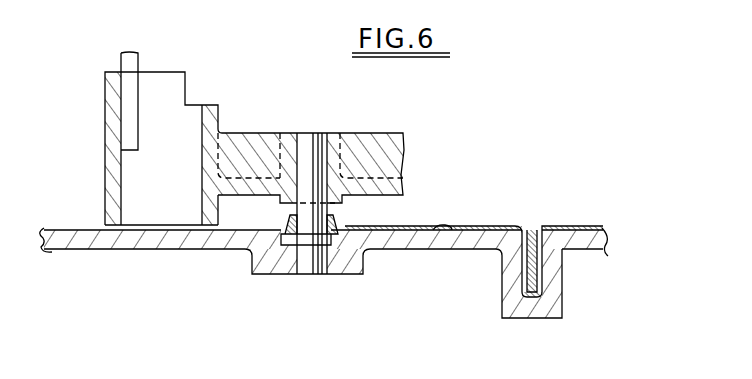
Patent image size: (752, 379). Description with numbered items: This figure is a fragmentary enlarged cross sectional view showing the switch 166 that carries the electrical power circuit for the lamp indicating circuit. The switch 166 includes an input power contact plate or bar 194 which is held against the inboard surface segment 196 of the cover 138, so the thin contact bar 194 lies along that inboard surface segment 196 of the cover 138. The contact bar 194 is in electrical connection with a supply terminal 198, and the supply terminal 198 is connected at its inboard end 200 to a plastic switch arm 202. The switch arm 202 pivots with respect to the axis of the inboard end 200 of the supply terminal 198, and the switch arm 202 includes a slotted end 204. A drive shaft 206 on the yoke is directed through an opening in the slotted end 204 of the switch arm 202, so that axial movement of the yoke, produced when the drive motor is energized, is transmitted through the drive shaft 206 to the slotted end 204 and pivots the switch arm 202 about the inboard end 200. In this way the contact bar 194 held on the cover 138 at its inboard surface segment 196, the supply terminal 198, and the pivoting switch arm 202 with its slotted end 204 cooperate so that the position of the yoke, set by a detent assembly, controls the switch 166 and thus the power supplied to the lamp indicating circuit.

The cover 138 is at (602, 228).
The switch 166 is at (392, 134).
The input power contact plate or bar 194 is at (417, 235).
The inboard surface segment 196 is at (452, 227).
The supply terminal 198 is at (307, 260).
The inboard end 200 is at (333, 210).
The plastic switch arm 202 is at (267, 152).
The slotted end 204 is at (112, 96).
The drive shaft 206 is at (132, 100).